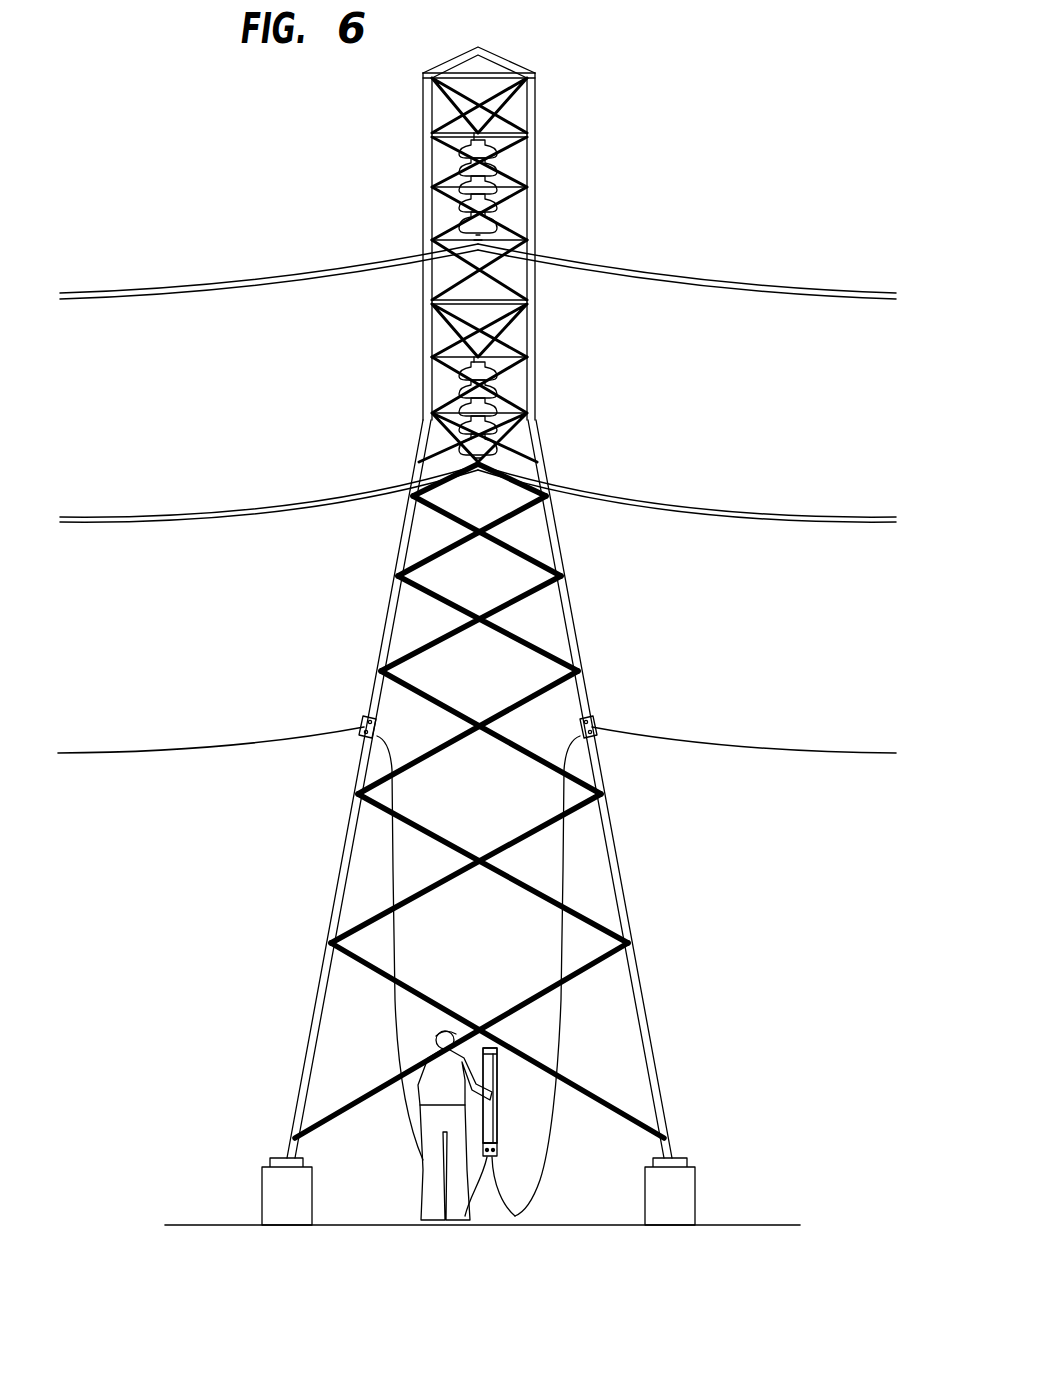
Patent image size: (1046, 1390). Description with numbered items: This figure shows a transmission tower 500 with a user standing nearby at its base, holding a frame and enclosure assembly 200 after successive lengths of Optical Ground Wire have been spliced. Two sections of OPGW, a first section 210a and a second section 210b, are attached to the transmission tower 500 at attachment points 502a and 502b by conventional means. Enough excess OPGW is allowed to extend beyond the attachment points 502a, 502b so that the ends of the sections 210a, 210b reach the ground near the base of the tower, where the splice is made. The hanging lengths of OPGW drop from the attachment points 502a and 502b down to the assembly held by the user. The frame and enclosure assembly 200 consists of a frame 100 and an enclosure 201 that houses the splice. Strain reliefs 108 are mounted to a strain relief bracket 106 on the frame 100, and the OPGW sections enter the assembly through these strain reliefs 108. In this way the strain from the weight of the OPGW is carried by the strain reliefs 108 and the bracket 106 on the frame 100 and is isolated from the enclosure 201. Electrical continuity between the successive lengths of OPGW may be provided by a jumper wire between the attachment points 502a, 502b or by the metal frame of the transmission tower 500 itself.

The transmission tower 500 is at (408, 186).
The attachment point 502a is at (352, 713).
The attachment point 502b is at (606, 713).
The OPGW section 210a is at (222, 743).
The OPGW section 210b is at (736, 743).
The frame 100 is at (507, 1032).
The frame and enclosure assembly 200 is at (507, 1062).
The enclosure 201 is at (501, 1109).
The strain relief 108 is at (513, 1144).
The strain relief bracket 106 is at (512, 1219).